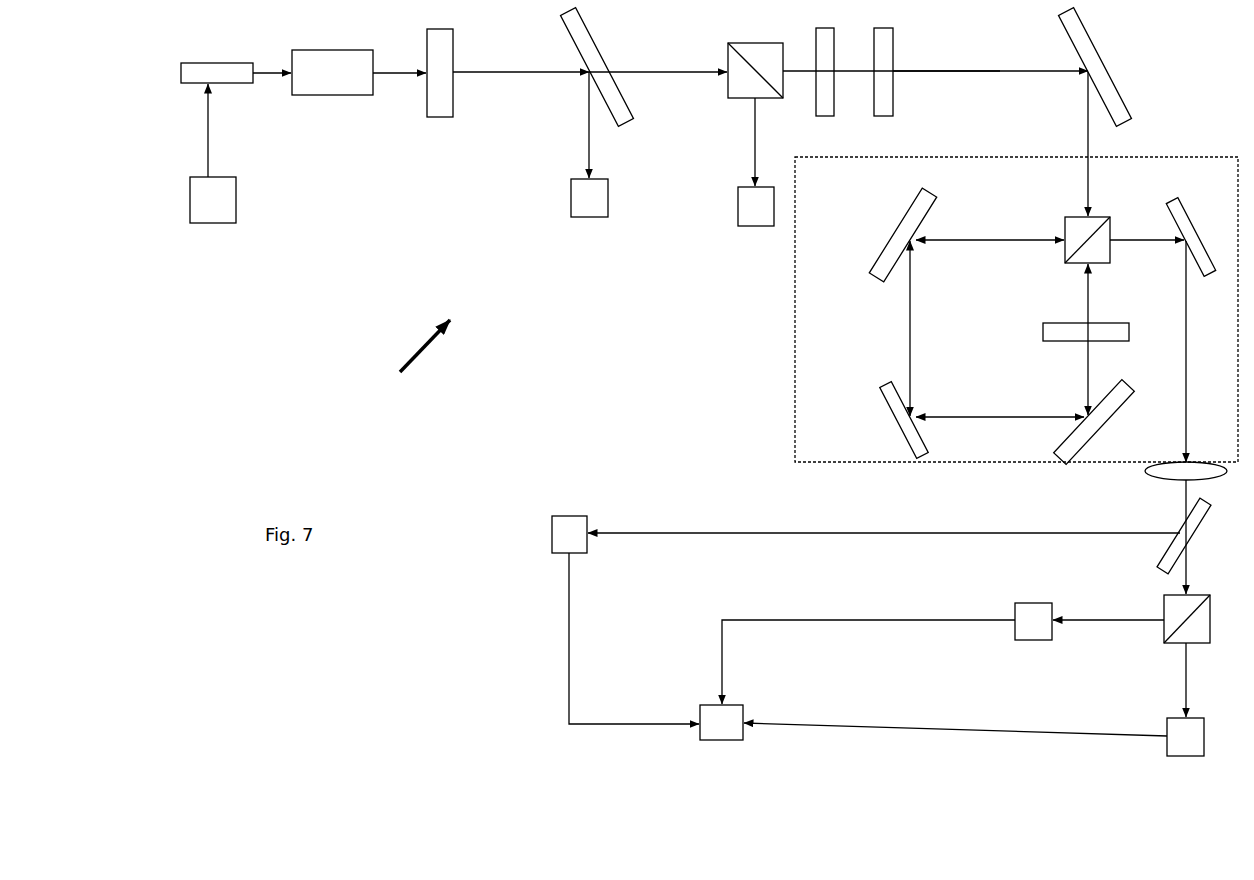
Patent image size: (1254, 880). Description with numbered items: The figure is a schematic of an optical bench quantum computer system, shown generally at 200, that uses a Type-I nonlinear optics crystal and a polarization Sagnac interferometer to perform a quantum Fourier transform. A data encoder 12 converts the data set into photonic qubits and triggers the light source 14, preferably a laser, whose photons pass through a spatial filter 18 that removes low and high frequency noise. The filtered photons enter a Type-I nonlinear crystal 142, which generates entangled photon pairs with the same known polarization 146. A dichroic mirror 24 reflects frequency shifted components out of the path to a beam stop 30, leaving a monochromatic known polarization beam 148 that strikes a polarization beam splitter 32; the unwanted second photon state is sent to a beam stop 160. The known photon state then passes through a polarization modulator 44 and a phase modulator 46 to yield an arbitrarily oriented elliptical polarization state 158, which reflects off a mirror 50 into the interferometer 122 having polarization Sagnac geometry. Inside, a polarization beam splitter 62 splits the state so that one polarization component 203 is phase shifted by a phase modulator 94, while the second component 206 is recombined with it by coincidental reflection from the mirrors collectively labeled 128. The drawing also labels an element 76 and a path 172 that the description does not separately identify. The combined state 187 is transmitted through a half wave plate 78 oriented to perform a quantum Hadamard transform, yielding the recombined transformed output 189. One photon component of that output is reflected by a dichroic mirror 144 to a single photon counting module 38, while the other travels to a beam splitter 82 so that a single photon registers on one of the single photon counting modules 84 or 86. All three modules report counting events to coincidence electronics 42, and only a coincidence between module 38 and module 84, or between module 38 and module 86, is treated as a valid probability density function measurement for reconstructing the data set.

The data encoder 12 is at (213, 153).
The light source 14 is at (236, 73).
The spatial filter 18 is at (359, 72).
The Type-I nonlinear crystal 142 is at (444, 123).
The entangled photon pair with same known polarization 146 is at (489, 67).
The dichroic mirror 24 is at (617, 81).
The beam stop 30 is at (589, 144).
The monochromatic known polarization beam 148 is at (660, 68).
The polarization beam splitter 32 is at (908, 70).
The beam stop 160 is at (756, 162).
The polarization modulator 44 is at (829, 84).
The phase modulator 46 is at (890, 84).
The arbitrarily oriented elliptical polarization state 158 is at (967, 68).
The mirror 50 is at (1095, 112).
The interferometer 122 is at (794, 442).
The polarization beam splitter 62 is at (1103, 220).
The second component 206 is at (1002, 238).
The mirrors 128 is at (895, 408).
The polarization component 203 is at (1083, 305).
The phase modulator 94 is at (1071, 337).
The light beam 172 is at (1147, 243).
The mirror 76 is at (1175, 200).
The combined state 187 is at (1204, 351).
The half wave plate 78 is at (1174, 475).
The recombined transformed output 189 is at (1185, 503).
The dichroic mirror 144 is at (1183, 522).
The single photon counting module 38 is at (866, 534).
The beam splitter 82 is at (1187, 619).
The single photon counting module 84 is at (1089, 621).
The single photon counting module 86 is at (1185, 699).
The coincidence electronics 42 is at (868, 646).
The Type-I nonlinear optical crystal analog system 200 is at (406, 366).